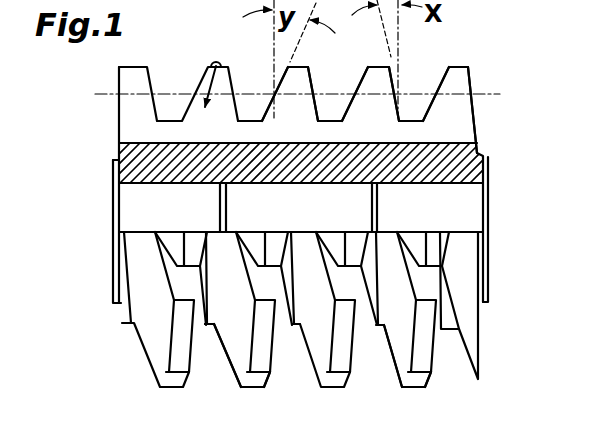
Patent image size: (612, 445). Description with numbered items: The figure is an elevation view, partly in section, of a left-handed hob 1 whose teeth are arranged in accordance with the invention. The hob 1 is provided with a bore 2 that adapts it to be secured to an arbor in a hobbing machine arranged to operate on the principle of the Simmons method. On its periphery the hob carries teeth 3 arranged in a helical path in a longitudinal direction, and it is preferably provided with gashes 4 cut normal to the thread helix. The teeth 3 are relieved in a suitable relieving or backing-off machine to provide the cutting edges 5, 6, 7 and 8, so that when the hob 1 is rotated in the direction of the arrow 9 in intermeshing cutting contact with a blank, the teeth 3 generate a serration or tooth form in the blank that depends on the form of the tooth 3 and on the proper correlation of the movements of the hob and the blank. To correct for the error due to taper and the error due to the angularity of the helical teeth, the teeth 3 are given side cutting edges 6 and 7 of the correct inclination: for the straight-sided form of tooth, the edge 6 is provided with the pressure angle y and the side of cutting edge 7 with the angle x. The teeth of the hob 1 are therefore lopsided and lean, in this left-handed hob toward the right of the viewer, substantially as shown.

The left-handed hob 1 is at (133, 163).
The bore 2 is at (454, 208).
The teeth 3 is at (452, 82).
The gashes 4 is at (421, 285).
The cutting edge 5 is at (299, 64).
The side cutting edge 6 is at (312, 79).
The side cutting edge 7 is at (283, 76).
The cutting edge 8 is at (258, 103).
The arrow 9 is at (214, 59).